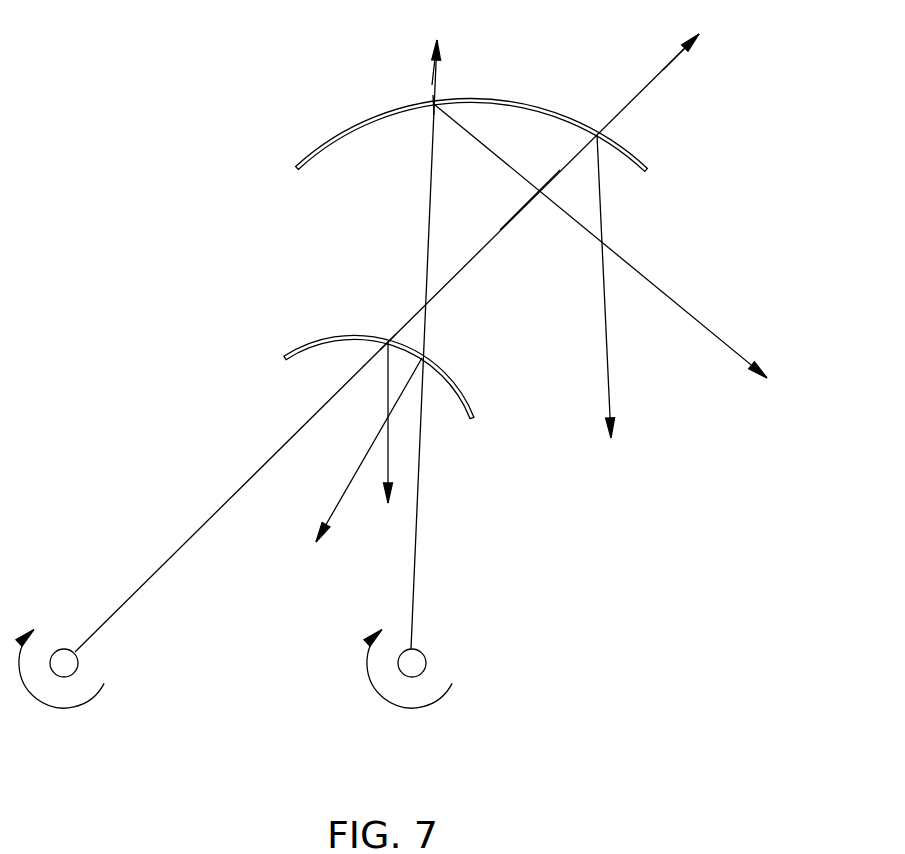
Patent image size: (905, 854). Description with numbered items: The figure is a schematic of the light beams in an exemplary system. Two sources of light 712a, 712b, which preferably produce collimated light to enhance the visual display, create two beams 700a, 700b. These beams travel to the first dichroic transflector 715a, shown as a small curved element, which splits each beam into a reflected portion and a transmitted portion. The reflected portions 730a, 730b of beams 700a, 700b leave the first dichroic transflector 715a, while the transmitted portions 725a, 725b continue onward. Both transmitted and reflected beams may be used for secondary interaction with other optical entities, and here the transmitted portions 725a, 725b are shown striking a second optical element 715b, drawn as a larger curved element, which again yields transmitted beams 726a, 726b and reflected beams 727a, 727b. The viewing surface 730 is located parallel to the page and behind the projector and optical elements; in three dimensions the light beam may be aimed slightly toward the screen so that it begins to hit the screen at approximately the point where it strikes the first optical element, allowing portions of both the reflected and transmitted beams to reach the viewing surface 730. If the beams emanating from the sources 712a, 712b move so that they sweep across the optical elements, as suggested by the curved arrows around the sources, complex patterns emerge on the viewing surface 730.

The beam 700a is at (215, 513).
The beam 700b is at (420, 468).
The source of light 712a is at (52, 648).
The source of light 712b is at (427, 662).
The first dichroic transflector 715a is at (328, 338).
The second optical element 715b is at (340, 135).
The transmitted portion 725a is at (407, 322).
The transmitted portion 725b is at (432, 148).
The transmitted beam 726a is at (664, 70).
The transmitted beam 726b is at (432, 85).
The reflected beam 727a is at (602, 305).
The reflected beam 727b is at (650, 287).
The viewing surface 730 is at (572, 76).
The reflected portion 730a is at (386, 388).
The reflected portion 730b is at (343, 496).